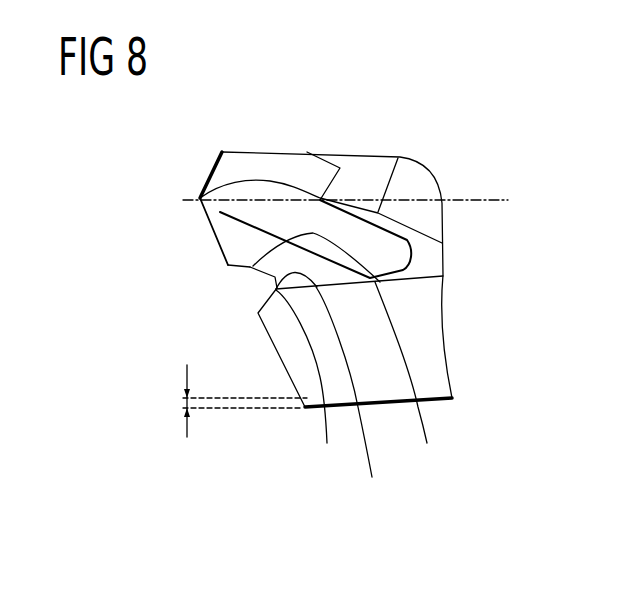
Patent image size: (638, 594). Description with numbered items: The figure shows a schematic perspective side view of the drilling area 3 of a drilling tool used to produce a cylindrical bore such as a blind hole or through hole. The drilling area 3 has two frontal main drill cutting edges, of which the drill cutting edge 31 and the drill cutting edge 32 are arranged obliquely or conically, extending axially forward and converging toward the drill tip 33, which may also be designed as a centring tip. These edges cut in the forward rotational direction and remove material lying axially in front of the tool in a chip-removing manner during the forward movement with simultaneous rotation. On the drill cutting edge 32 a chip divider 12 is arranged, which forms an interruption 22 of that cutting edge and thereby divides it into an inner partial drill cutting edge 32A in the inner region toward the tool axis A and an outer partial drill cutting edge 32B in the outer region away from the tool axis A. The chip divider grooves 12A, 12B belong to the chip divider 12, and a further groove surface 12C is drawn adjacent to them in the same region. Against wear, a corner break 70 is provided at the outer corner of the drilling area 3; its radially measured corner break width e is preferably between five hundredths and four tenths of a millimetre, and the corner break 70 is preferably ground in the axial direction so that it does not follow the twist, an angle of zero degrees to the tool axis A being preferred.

The drilling area 3 is at (412, 116).
The drill cutting edge 31 is at (210, 175).
The drill tip 33 is at (200, 198).
The drill cutting edge 32 is at (213, 230).
The partial drill cutting edge 32A is at (227, 264).
The interruption 22 is at (228, 269).
The chip divider 12 is at (268, 281).
The partial drill cutting edge 32B is at (280, 357).
The chip divider groove 12A is at (414, 384).
The chip divider groove 12B is at (310, 388).
The flute surface portion 12C is at (359, 404).
The corner break 70 is at (305, 408).
The tool axis A is at (467, 198).
The corner break width e is at (236, 401).